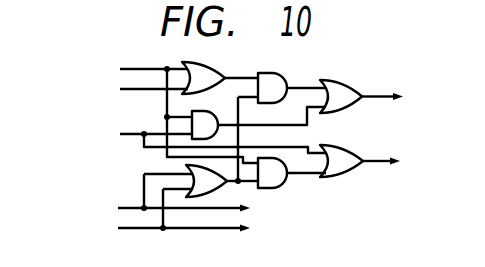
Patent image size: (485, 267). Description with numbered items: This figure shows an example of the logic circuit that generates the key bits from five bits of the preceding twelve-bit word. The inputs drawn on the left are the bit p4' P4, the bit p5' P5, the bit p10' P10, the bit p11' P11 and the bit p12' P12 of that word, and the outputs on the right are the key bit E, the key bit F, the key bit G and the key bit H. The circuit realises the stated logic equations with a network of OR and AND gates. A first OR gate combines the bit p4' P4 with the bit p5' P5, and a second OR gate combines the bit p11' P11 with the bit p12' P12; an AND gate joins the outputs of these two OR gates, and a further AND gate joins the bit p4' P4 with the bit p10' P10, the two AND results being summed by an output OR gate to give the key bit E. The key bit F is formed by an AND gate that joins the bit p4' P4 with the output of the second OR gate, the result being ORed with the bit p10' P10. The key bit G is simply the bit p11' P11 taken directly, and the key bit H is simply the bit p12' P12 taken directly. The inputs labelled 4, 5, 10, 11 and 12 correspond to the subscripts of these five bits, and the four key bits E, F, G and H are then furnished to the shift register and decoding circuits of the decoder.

The bit p4' P4 is at (108, 44).
The bit p5' P5 is at (107, 97).
The bit p10' P10 is at (109, 112).
The bit p11' P11 is at (109, 177).
The bit p12' P12 is at (114, 232).
The input signal P4' 4 is at (135, 66).
The input signal P5' 5 is at (116, 97).
The input signal P10' 10 is at (136, 134).
The input signal P11' 11 is at (164, 199).
The input signal P12' 12 is at (148, 238).
The key bit E is at (392, 97).
The key bit F is at (390, 163).
The key bit G is at (266, 208).
The key bit H is at (266, 235).